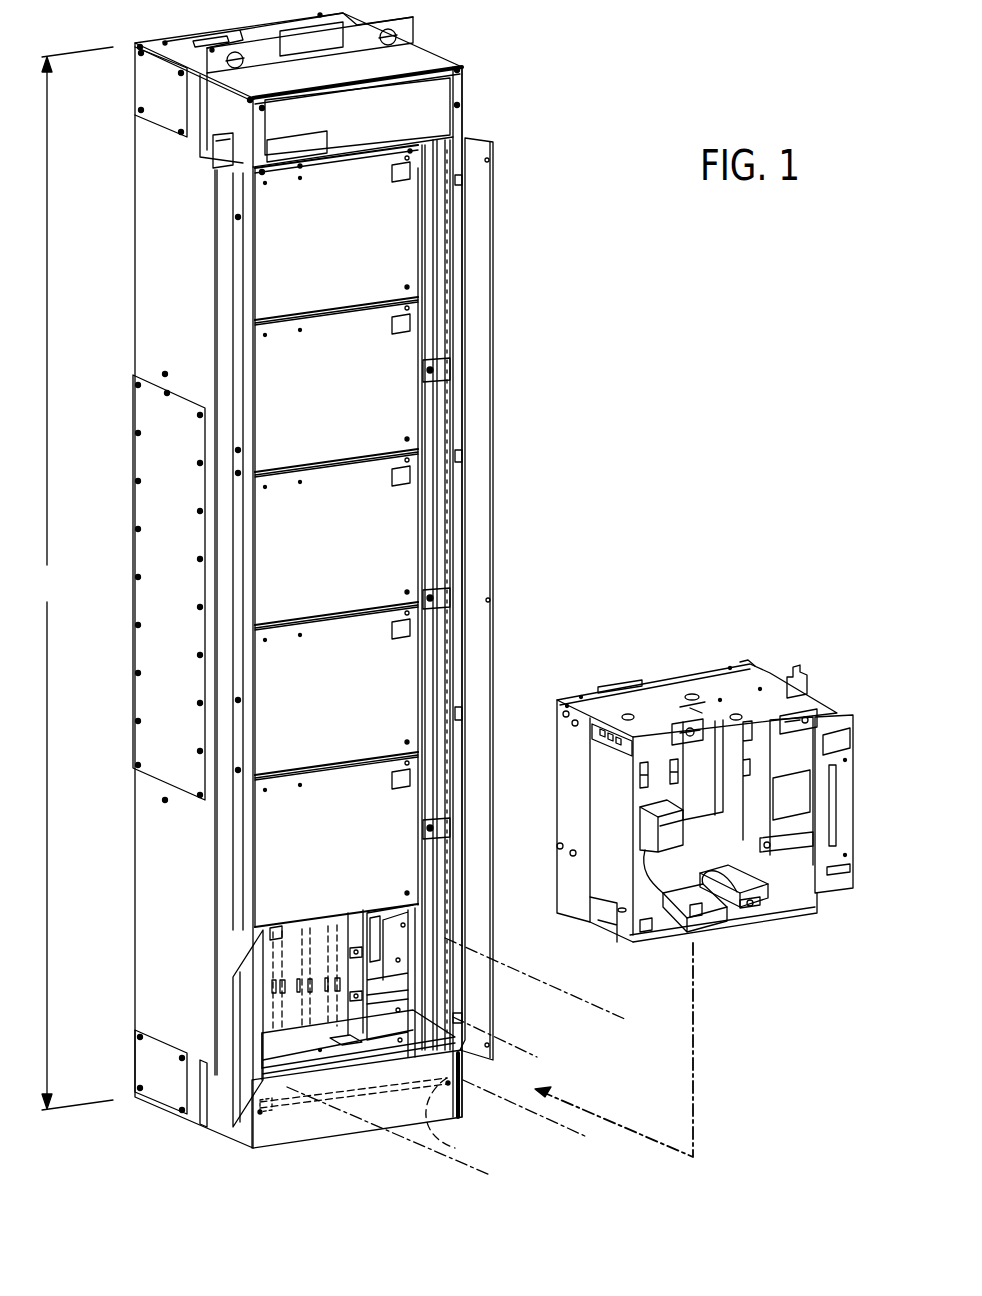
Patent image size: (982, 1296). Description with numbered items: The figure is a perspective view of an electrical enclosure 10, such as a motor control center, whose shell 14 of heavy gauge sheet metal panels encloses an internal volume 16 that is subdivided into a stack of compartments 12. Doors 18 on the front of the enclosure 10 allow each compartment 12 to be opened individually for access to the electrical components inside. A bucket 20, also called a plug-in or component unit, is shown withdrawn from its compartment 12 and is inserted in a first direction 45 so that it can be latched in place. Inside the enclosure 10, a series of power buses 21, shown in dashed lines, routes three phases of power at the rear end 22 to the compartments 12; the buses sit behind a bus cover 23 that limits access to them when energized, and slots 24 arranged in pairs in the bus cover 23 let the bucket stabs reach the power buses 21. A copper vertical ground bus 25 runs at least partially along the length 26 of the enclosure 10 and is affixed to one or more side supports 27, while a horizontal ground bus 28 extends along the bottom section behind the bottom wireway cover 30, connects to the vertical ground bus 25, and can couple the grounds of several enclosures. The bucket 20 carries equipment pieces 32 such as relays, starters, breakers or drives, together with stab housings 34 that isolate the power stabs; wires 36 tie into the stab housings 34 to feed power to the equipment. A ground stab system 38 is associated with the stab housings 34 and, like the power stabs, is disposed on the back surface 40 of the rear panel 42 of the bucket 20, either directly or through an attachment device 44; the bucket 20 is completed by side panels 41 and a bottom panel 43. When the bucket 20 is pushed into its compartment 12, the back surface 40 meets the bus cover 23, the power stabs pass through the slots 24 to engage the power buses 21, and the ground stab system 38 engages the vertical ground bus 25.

The electrical enclosure 10 is at (597, 132).
The compartment 12 is at (280, 1055).
The shell 14 is at (168, 263).
The internal volume 16 is at (342, 1049).
The door 18 is at (336, 536).
The bucket 20 is at (738, 641).
The power bus 21 is at (263, 947).
The rear end 22 is at (372, 914).
The bus cover 23 is at (339, 914).
The slot 24 is at (272, 987).
The vertical ground bus 25 is at (275, 935).
The length 26 is at (74, 578).
The side support 27 is at (367, 920).
The horizontal ground bus 28 is at (456, 1143).
The bottom wireway cover 30 is at (450, 1100).
The equipment piece 32 is at (757, 893).
The stab housing 34 is at (648, 823).
The wire 36 is at (693, 855).
The ground stab system 38 is at (684, 816).
The back surface 40 is at (578, 698).
The side panel 41 is at (807, 757).
The rear panel 42 is at (618, 773).
The bottom panel 43 is at (630, 917).
The attachment device 44 is at (648, 683).
The first direction 45 is at (693, 1112).